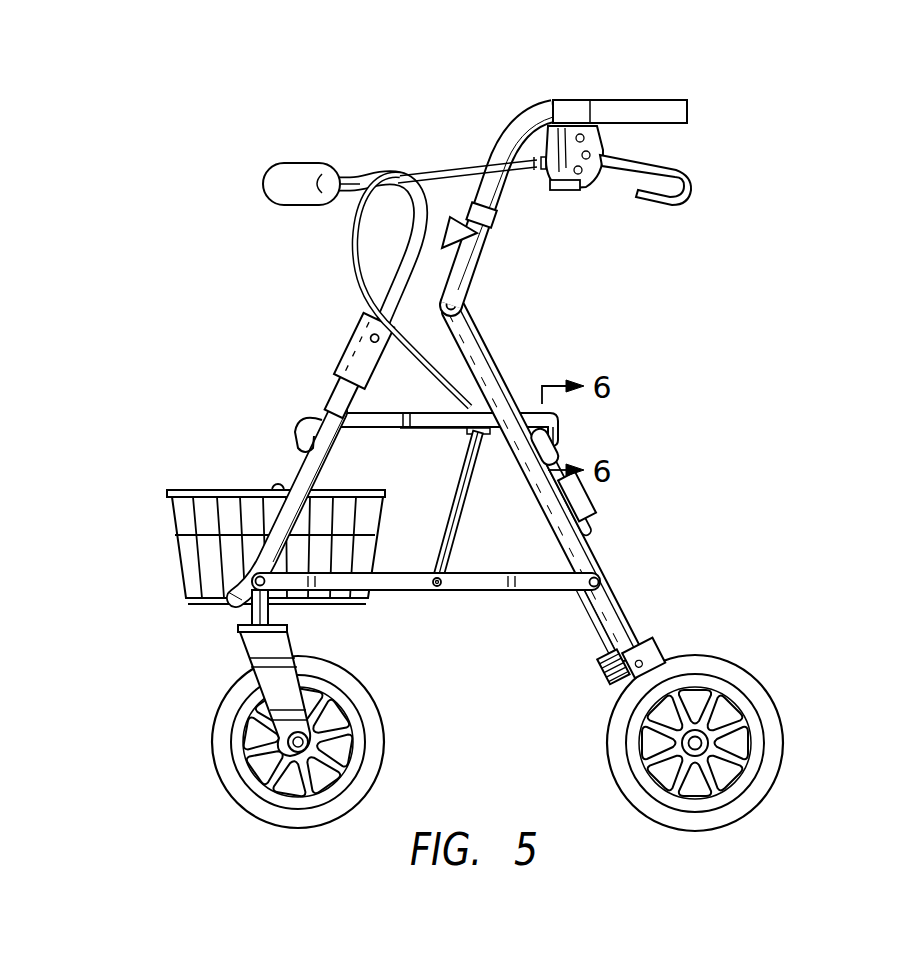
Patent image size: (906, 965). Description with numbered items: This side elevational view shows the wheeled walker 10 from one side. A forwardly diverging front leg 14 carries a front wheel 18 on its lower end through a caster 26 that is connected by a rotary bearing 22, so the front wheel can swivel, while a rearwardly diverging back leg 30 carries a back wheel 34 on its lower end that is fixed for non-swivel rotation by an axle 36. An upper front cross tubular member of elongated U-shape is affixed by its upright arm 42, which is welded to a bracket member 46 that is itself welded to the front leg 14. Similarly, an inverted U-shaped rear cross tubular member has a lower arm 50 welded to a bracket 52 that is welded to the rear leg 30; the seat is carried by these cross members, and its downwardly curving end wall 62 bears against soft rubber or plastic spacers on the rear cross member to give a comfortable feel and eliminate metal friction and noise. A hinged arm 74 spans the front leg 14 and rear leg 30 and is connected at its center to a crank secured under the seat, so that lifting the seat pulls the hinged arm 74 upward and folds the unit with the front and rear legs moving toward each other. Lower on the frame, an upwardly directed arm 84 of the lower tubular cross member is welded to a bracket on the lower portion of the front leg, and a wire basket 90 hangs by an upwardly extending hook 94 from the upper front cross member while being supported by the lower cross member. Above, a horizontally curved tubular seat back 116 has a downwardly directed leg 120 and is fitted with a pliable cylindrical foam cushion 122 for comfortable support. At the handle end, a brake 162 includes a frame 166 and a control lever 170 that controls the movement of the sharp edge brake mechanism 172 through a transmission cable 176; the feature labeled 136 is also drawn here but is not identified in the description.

The wheeled walker 10 is at (276, 336).
The front leg 14 is at (300, 472).
The front wheel 18 is at (297, 828).
The rotary bearing 22 is at (272, 631).
The caster 26 is at (277, 688).
The back leg 30 is at (473, 335).
The back wheel 34 is at (750, 675).
The axle 36 is at (700, 738).
The upright arm 42 is at (340, 393).
The bracket member 46 is at (362, 356).
The lower arm 50 is at (553, 453).
The bracket 52 is at (578, 507).
The downwardly curving end wall 62 is at (560, 432).
The hinged arm 74 is at (440, 592).
The upwardly directed arm 84 is at (235, 590).
The wire basket 90 is at (158, 524).
The hook 94 is at (284, 432).
The tubular seat back 116 is at (357, 178).
The downwardly directed leg 120 is at (414, 257).
The cylindrical cushion 122 is at (288, 176).
The brake hand grip 136 is at (645, 113).
The brake 162 is at (569, 208).
The frame 166 is at (558, 148).
The control lever 170 is at (677, 168).
The shape edge brake mechanism 172 is at (660, 650).
The transmission cable 176 is at (352, 231).